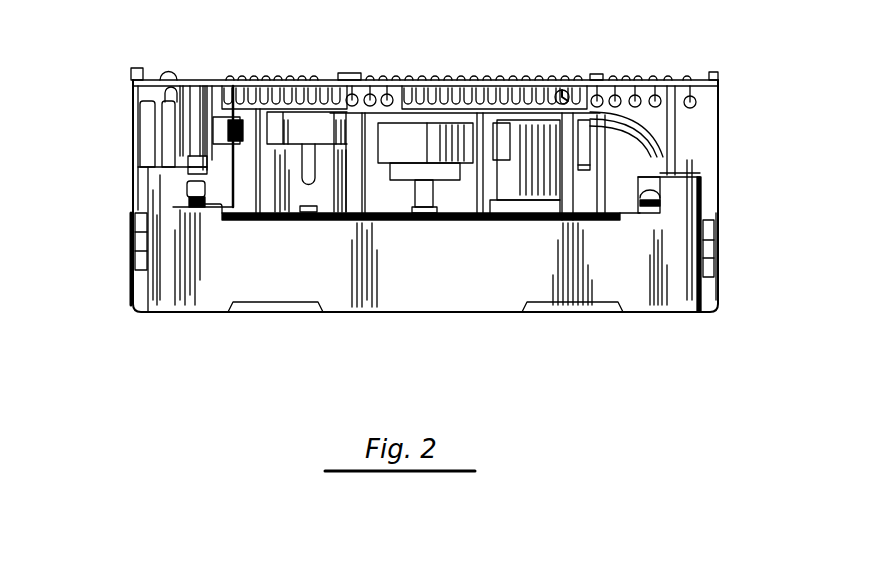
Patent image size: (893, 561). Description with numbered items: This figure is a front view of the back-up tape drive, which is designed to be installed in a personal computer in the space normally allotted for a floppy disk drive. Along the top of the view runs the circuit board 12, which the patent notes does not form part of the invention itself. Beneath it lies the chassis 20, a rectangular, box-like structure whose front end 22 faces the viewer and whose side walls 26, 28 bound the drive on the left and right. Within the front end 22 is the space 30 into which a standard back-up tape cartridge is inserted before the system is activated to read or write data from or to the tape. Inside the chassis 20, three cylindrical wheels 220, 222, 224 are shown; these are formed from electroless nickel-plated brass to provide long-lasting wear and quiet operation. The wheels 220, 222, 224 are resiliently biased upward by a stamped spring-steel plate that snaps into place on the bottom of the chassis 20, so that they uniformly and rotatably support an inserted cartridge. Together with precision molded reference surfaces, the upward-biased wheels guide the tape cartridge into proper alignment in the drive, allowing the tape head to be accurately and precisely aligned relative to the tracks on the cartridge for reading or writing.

The circuit board 12 is at (208, 79).
The chassis 20 is at (665, 316).
The front end 22 is at (425, 291).
The side wall 26 is at (128, 248).
The side wall 28 is at (722, 256).
The space 30 is at (582, 170).
The cylindrical wheel 220 is at (660, 192).
The cylindrical wheel 222 is at (422, 224).
The cylindrical wheel 224 is at (207, 202).